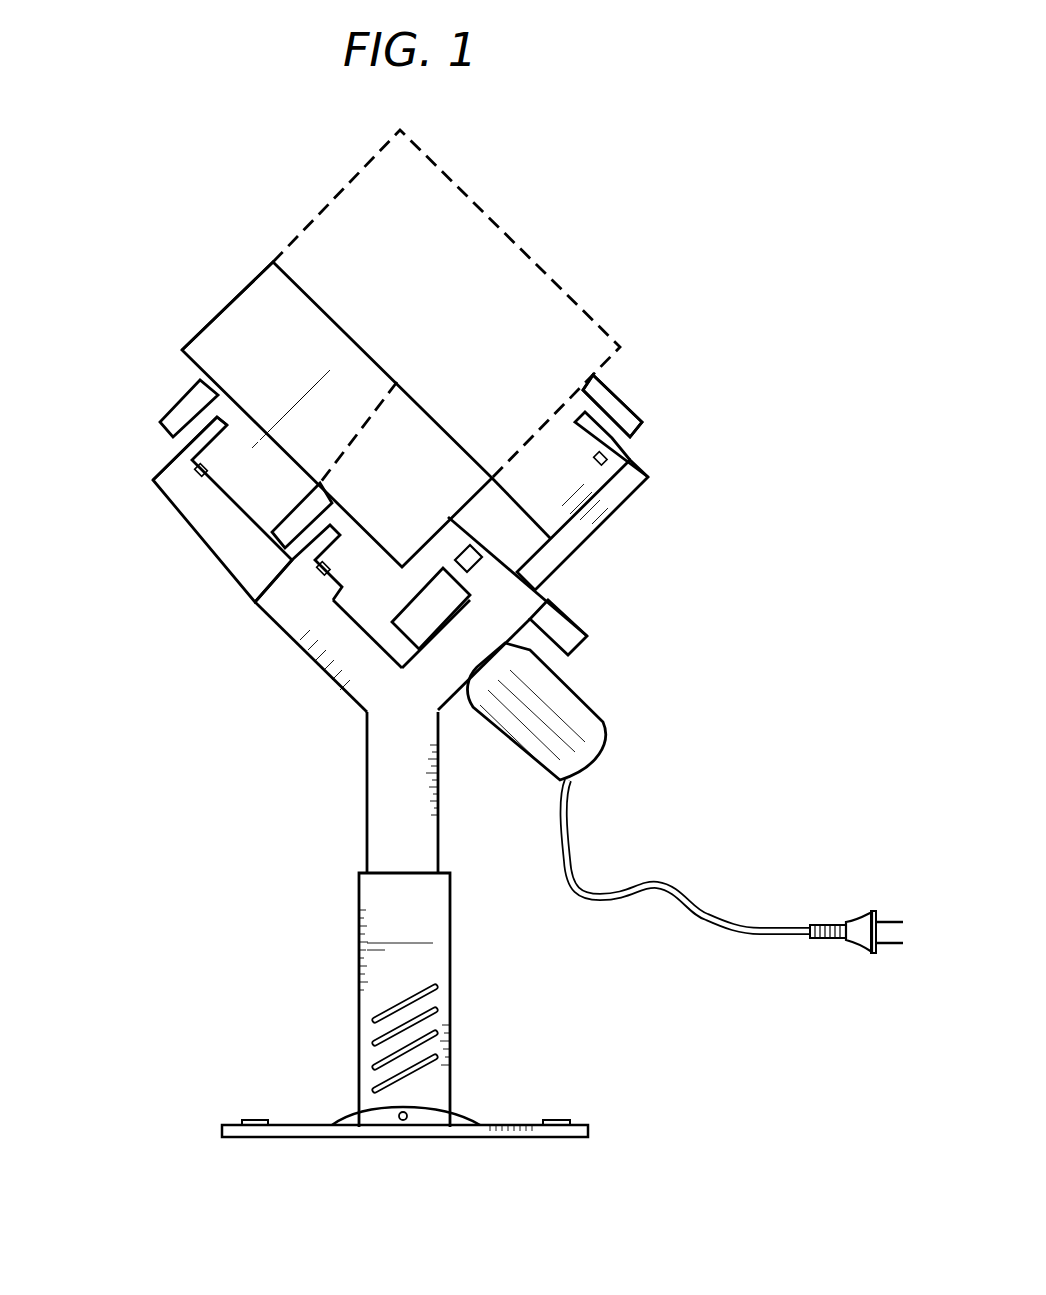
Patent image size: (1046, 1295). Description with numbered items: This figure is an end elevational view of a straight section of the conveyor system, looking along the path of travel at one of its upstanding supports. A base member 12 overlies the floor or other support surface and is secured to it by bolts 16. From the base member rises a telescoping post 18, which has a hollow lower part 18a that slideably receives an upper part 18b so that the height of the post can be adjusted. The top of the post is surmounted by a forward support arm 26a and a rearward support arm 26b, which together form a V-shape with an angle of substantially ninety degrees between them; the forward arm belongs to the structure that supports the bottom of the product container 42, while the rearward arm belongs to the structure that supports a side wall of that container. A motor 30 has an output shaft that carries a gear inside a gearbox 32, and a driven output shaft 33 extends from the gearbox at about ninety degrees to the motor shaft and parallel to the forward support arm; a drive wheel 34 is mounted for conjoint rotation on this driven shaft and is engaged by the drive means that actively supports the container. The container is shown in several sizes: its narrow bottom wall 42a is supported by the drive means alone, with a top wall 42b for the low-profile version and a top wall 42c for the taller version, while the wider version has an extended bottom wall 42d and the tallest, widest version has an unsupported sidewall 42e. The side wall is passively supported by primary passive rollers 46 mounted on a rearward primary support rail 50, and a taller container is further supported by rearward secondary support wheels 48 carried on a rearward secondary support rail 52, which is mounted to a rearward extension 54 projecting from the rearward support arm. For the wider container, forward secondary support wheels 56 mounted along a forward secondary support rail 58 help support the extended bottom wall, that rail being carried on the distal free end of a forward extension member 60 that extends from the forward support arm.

The base member 12 is at (503, 1123).
The bolts 16 is at (253, 1123).
The telescoping post 18 is at (392, 919).
The lower part 18a is at (452, 983).
The upper part 18b is at (390, 820).
The forward support arm 26a is at (543, 655).
The rearward support arm 26b is at (272, 620).
The motor 30 is at (603, 727).
The gearbox 32 is at (411, 631).
The driven output shaft 33 is at (467, 565).
The drive wheel 34 is at (577, 623).
The product container 42 is at (278, 391).
The bottom wall 42a is at (495, 482).
The top wall 42b is at (399, 380).
The top wall 42c is at (217, 317).
The extended bottom wall 42d is at (613, 360).
The unsupported sidewall 42e is at (497, 213).
The primary passive rollers 46 is at (223, 537).
The rearward secondary support wheels 48 is at (185, 392).
The rearward primary support rail 50 is at (325, 548).
The rearward secondary support rail 52 is at (192, 437).
The rearward extension 54 is at (177, 502).
The forward secondary support wheels 56 is at (640, 410).
The forward secondary support rail 58 is at (592, 440).
The forward extension member 60 is at (630, 507).